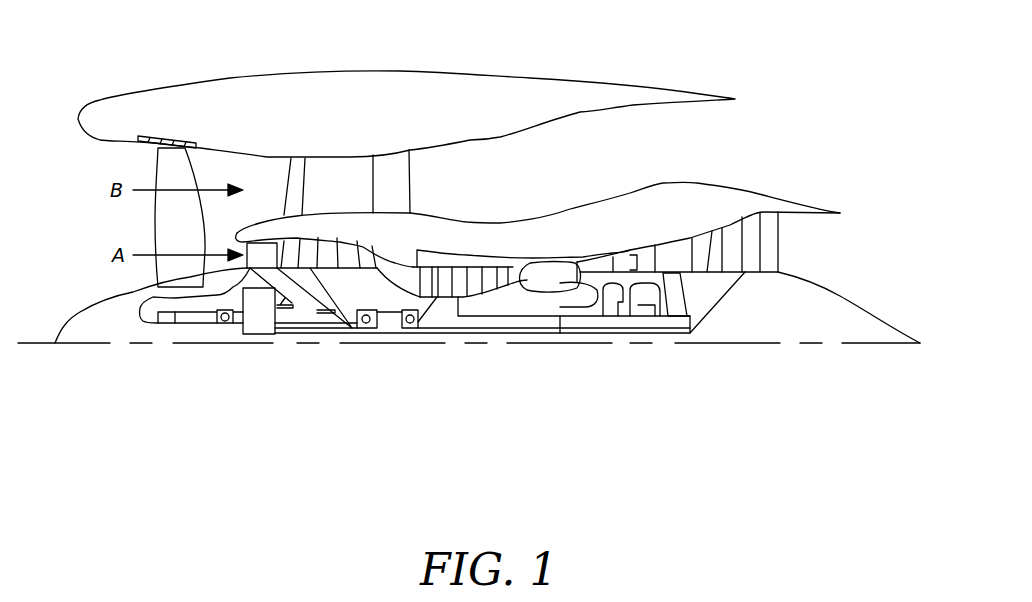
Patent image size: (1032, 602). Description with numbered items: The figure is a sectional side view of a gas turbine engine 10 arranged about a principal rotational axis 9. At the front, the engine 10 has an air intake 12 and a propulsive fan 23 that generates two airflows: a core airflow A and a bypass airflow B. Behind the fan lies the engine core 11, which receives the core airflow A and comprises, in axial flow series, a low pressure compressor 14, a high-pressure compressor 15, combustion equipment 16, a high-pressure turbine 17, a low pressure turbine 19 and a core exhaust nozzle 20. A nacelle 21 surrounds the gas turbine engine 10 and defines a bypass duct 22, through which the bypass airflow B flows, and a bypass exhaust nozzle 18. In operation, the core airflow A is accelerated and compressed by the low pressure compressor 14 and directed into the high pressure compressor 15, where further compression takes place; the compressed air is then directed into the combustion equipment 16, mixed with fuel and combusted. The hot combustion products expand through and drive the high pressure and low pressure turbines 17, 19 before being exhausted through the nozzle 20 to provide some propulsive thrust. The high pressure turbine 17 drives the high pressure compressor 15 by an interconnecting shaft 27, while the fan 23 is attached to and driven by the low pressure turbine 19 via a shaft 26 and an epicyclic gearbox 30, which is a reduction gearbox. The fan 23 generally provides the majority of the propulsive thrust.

The principal rotational axis 9 is at (728, 343).
The gas turbine engine 10 is at (382, 144).
The core 11 is at (528, 226).
The air intake 12 is at (117, 212).
The low pressure compressor 14 is at (340, 243).
The high-pressure compressor 15 is at (478, 280).
The combustion equipment 16 is at (550, 280).
The high-pressure turbine 17 is at (613, 262).
The bypass exhaust nozzle 18 is at (742, 140).
The low pressure turbine 19 is at (748, 232).
The core exhaust nozzle 20 is at (827, 242).
The nacelle 21 is at (385, 85).
The bypass duct 22 is at (677, 153).
The propulsive fan 23 is at (160, 222).
The shaft 26 is at (468, 332).
The interconnecting shaft 27 is at (510, 316).
The epicyclic gearbox 30 is at (258, 322).